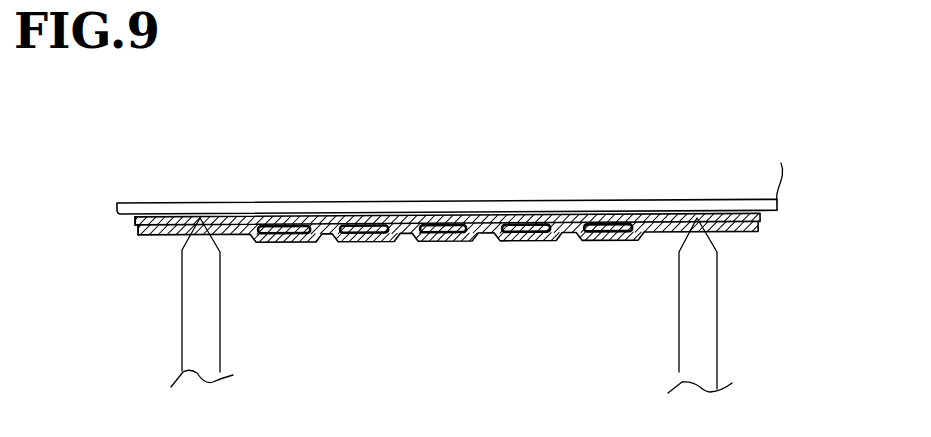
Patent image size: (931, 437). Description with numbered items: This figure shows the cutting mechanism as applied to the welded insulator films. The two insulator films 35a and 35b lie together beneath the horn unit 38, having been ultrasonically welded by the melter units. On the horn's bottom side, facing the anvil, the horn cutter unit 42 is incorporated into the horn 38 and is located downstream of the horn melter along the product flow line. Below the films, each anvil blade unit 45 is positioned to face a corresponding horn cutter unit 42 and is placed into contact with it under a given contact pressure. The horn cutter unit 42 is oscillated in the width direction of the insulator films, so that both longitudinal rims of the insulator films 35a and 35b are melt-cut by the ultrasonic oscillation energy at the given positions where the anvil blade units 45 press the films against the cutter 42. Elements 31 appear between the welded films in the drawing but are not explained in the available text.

The horn unit 38 is at (119, 203).
The insulator film 35a is at (761, 217).
The insulator film 35b is at (748, 233).
The semiconductor chips 31 is at (373, 246).
The horn cutter unit 42 is at (128, 216).
The anvil blade unit 45 is at (193, 305).